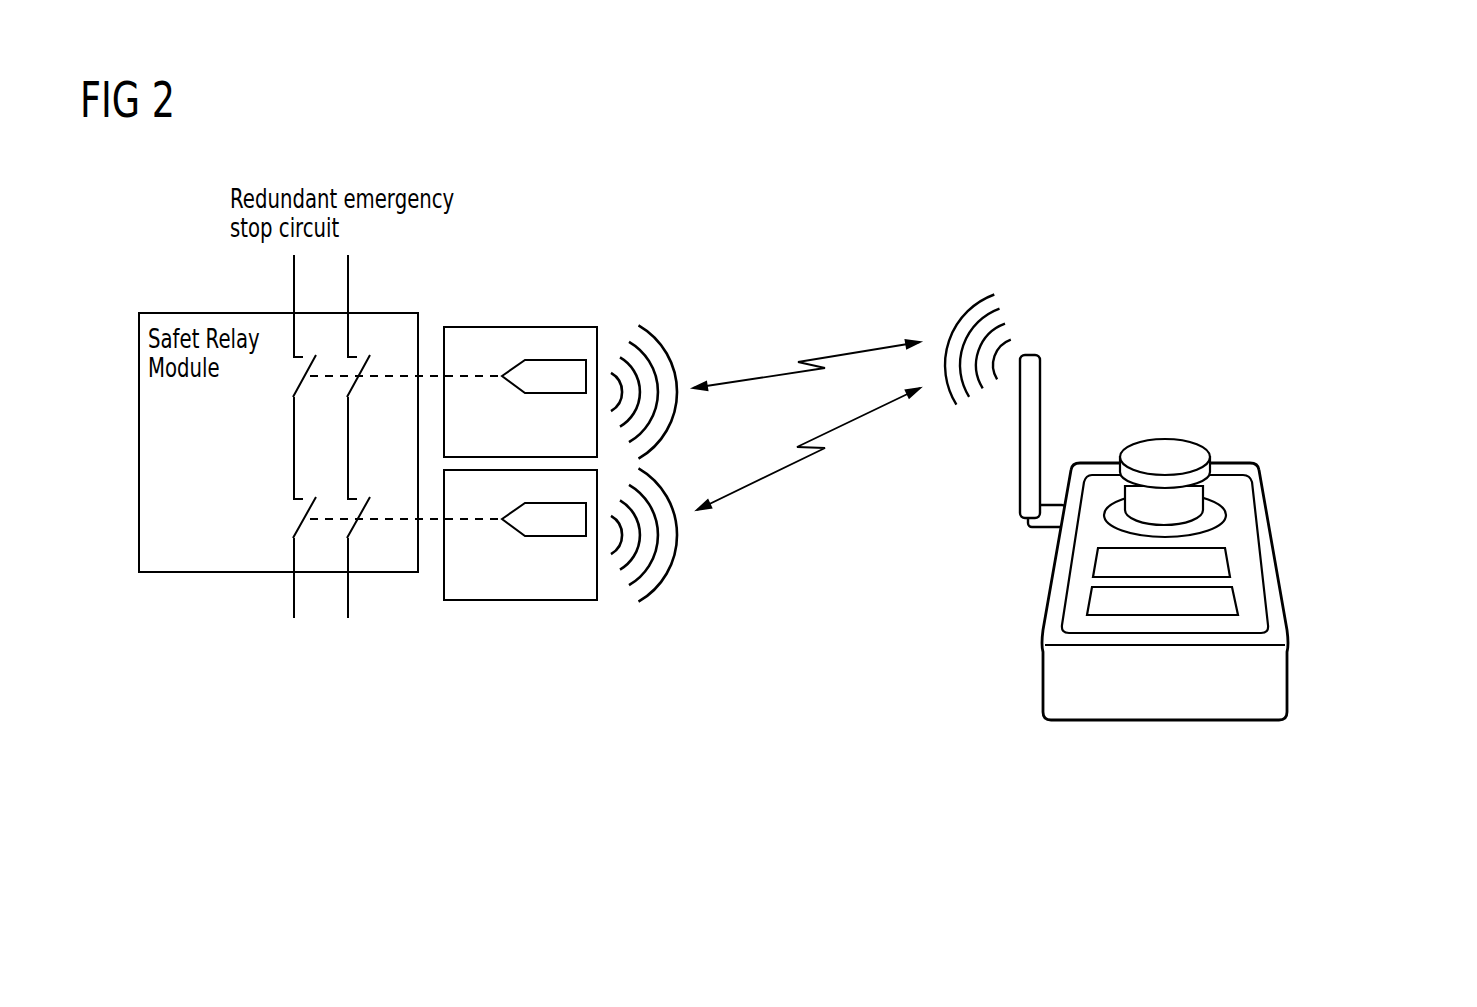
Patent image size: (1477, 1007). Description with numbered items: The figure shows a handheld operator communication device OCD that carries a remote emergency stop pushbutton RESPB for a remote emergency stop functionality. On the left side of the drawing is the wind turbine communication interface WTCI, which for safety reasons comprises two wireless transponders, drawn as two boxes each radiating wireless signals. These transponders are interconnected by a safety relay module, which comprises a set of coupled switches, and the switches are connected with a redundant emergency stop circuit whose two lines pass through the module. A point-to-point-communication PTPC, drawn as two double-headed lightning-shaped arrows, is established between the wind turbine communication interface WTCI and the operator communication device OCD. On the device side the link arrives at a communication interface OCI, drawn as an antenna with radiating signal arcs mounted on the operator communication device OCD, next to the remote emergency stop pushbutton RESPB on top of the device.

The wind turbine communication interface WTCI is at (600, 300).
The point-to-point-communication PTPC is at (806, 413).
The operator control device communication interface (antenna) OCI is at (1040, 338).
The operator communication device OCD is at (1270, 550).
The remote emergency stop pushbutton RESPB is at (1178, 442).